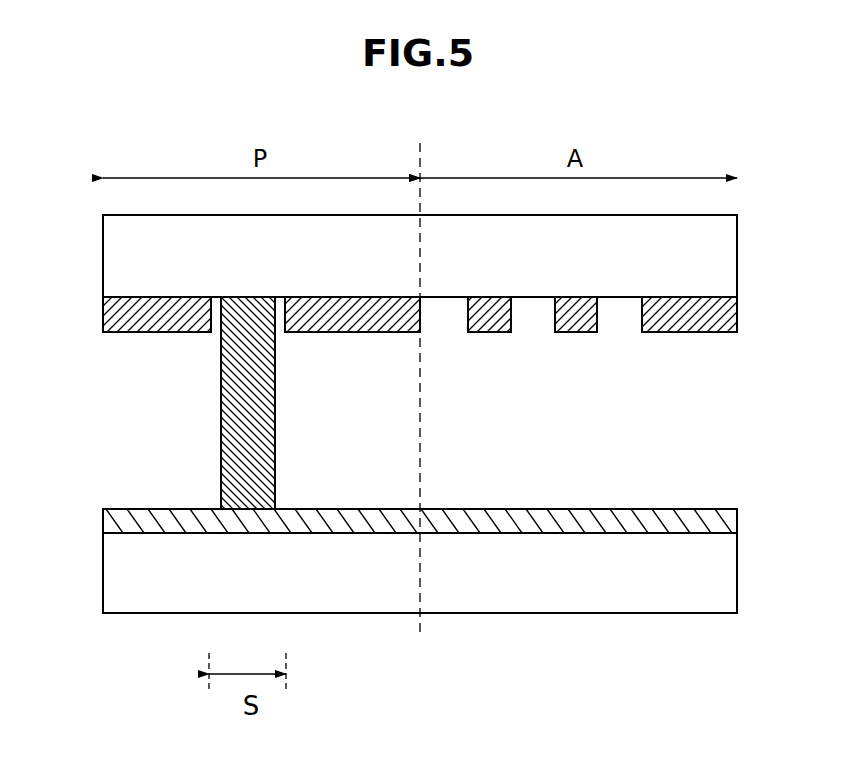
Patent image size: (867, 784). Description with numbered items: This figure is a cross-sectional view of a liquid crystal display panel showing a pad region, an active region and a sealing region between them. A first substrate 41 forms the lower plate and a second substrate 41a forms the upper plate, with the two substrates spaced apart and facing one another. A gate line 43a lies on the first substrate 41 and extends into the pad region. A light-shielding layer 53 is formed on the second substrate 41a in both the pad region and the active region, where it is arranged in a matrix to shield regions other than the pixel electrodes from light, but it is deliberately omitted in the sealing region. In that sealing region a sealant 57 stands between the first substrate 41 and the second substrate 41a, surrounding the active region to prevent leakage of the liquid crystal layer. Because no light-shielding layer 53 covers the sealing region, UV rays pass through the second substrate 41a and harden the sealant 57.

The second substrate 41a is at (724, 258).
The light-shielding layer 53 is at (125, 312).
The sealant 57 is at (232, 416).
The gate line 43a is at (723, 520).
The first substrate 41 is at (723, 570).